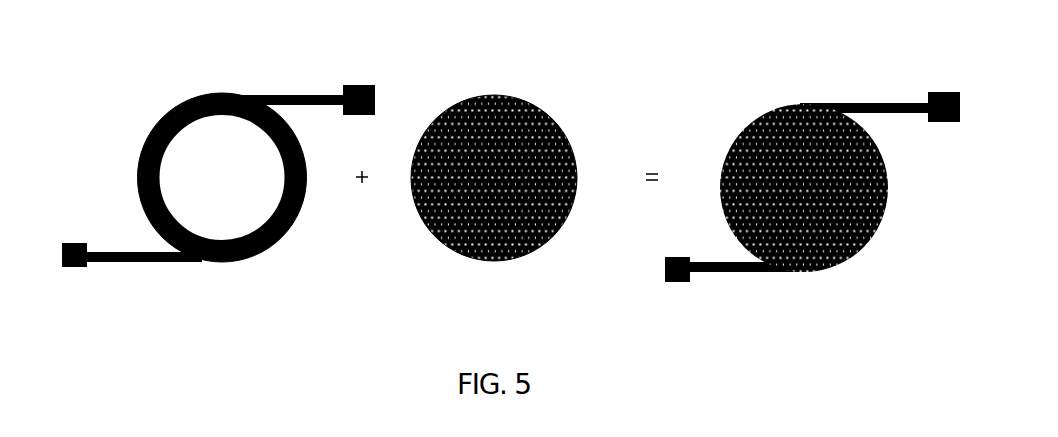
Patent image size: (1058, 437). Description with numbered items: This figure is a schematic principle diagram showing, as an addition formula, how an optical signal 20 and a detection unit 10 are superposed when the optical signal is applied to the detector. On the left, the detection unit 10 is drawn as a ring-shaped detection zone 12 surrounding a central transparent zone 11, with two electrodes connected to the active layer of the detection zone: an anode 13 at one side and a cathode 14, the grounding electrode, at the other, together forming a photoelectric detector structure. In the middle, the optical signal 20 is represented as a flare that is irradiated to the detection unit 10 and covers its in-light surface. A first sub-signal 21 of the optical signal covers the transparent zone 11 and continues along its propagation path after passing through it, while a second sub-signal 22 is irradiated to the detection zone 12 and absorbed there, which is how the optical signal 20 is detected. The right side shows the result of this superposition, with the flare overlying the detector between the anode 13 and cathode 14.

The detection unit 10 is at (241, 164).
The transparent zone 11 is at (235, 217).
The detection zone 12 is at (256, 193).
The anode 13 is at (72, 256).
The cathode 14 is at (300, 93).
The optical signal 20 is at (649, 148).
The first sub-signal 21 is at (507, 151).
The second sub-signal 22 is at (505, 97).